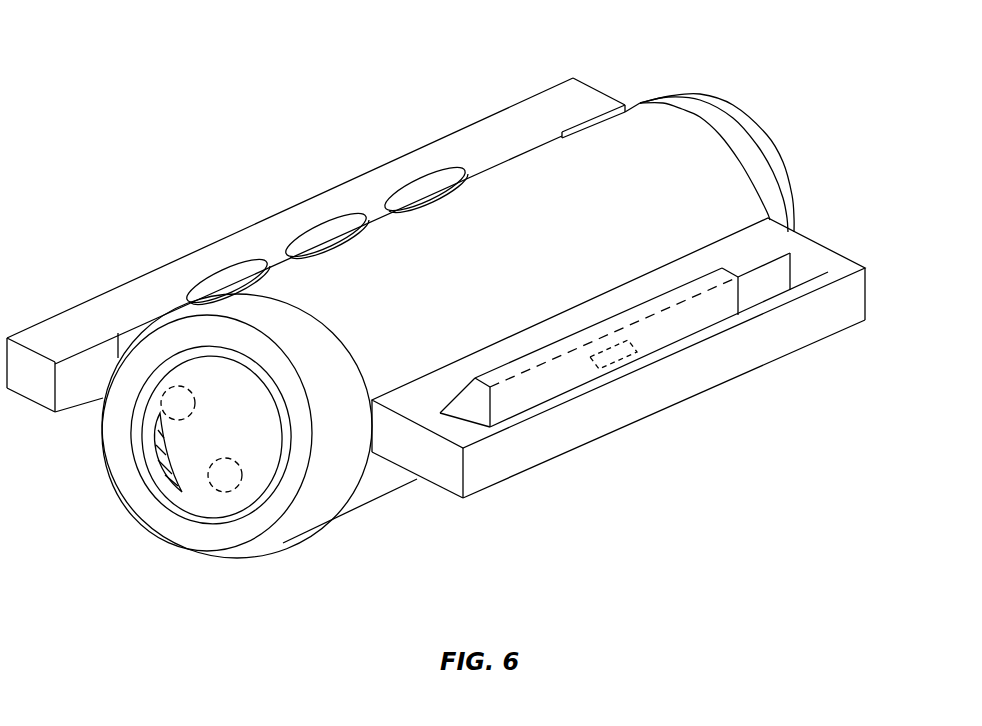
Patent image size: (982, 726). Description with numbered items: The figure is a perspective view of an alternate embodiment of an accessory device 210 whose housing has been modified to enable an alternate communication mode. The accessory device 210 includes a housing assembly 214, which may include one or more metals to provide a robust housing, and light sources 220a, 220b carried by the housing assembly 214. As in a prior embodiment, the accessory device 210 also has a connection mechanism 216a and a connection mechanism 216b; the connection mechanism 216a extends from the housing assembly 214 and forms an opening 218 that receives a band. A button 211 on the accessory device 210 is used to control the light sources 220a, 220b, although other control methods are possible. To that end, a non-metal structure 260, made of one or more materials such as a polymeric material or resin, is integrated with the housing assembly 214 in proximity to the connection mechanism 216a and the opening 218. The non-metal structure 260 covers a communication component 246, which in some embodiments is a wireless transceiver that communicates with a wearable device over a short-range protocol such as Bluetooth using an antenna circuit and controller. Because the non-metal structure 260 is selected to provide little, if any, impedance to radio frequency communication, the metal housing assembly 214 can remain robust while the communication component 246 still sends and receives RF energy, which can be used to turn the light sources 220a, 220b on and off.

The accessory device 210 is at (71, 90).
The button 211 is at (787, 155).
The housing assembly 214 is at (633, 105).
The connection mechanism 216a is at (785, 357).
The connection mechanism 216b is at (108, 292).
The opening 218 is at (583, 352).
The light source 220a is at (238, 482).
The light source 220b is at (192, 422).
The communication component 246 is at (627, 360).
The non-metal structure 260 is at (740, 292).